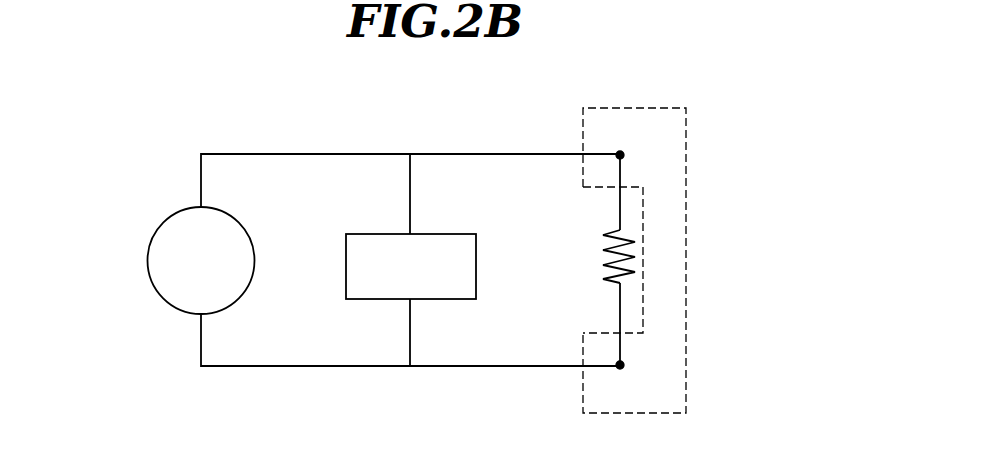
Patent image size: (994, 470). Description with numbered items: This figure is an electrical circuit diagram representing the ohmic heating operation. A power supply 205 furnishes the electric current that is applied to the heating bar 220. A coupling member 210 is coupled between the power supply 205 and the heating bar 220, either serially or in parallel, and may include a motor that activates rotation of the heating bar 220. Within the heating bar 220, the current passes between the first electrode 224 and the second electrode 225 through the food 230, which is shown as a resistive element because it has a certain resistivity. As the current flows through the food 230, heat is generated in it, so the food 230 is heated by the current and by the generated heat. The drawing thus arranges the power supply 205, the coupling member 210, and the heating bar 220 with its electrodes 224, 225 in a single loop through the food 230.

The power supply 205 is at (172, 212).
The coupling member 210 is at (450, 233).
The heating bar 220 is at (665, 107).
The first electrode 224 is at (621, 138).
The second electrode 225 is at (621, 380).
The food 230 is at (643, 300).